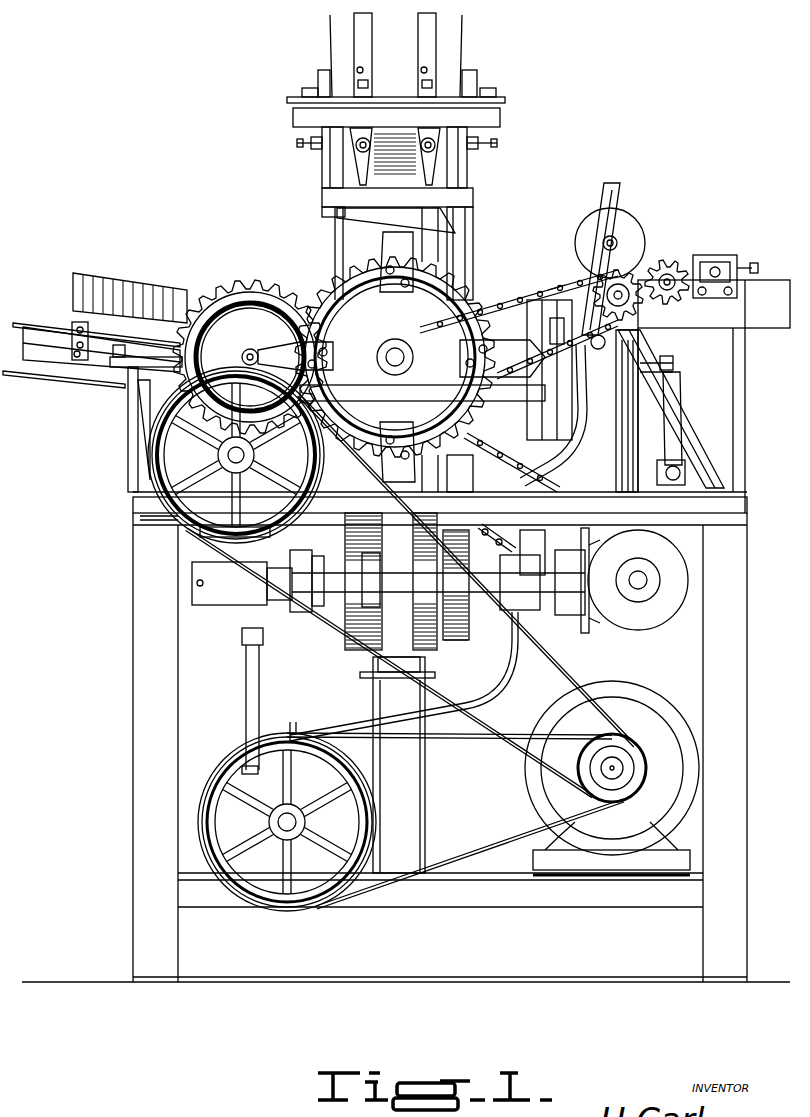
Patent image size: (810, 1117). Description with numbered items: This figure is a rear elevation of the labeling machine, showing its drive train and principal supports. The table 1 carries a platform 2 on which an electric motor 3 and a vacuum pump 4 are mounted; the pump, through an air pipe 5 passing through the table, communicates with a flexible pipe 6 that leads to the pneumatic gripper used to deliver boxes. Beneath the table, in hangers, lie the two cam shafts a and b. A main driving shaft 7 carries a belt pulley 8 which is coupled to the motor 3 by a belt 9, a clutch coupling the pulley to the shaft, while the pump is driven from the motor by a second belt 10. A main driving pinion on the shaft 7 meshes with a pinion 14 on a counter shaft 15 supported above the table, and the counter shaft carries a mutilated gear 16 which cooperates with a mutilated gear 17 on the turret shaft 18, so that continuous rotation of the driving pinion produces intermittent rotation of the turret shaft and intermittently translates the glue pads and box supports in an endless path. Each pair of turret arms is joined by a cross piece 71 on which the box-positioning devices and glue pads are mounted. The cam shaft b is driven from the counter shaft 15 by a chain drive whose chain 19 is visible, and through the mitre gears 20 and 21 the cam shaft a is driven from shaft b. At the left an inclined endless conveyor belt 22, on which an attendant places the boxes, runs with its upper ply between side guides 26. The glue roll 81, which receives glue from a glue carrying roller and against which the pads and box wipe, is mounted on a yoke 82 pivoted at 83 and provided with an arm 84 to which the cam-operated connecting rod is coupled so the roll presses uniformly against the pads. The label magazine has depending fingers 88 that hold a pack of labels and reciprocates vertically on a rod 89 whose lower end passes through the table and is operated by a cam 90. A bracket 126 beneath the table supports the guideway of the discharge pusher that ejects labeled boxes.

The table 1 is at (740, 508).
The platform 2 is at (523, 893).
The electric motor 3 is at (636, 718).
The vacuum pump 4 is at (272, 852).
The air pipe 5 is at (506, 680).
The flexible pipe 6 is at (513, 463).
The main driving shaft 7 is at (228, 456).
The belt pulley 8 is at (155, 495).
The belt 9 is at (565, 673).
The belt 10 is at (372, 893).
The pinion 14 is at (260, 280).
The counter shaft 15 is at (250, 356).
The mutilated gear 16 is at (226, 338).
The mutilated gear 17 is at (462, 288).
The turret shaft 18 is at (385, 357).
The chain 19 is at (540, 480).
The mitre gear 20 is at (638, 580).
The mitre gear 21 is at (581, 612).
The endless conveyor belt 22 is at (85, 385).
The side guides 26 is at (65, 322).
The cross piece 71 is at (370, 222).
The glue roll 81 is at (640, 238).
The yoke 82 is at (618, 196).
The pivot 83 is at (760, 300).
The arm 84 is at (745, 392).
The depending fingers 88 is at (333, 161).
The rod 89 is at (458, 225).
The cam 90 is at (452, 610).
The bracket 126 is at (428, 780).
The cam shaft a is at (340, 590).
The cam shaft b is at (638, 578).